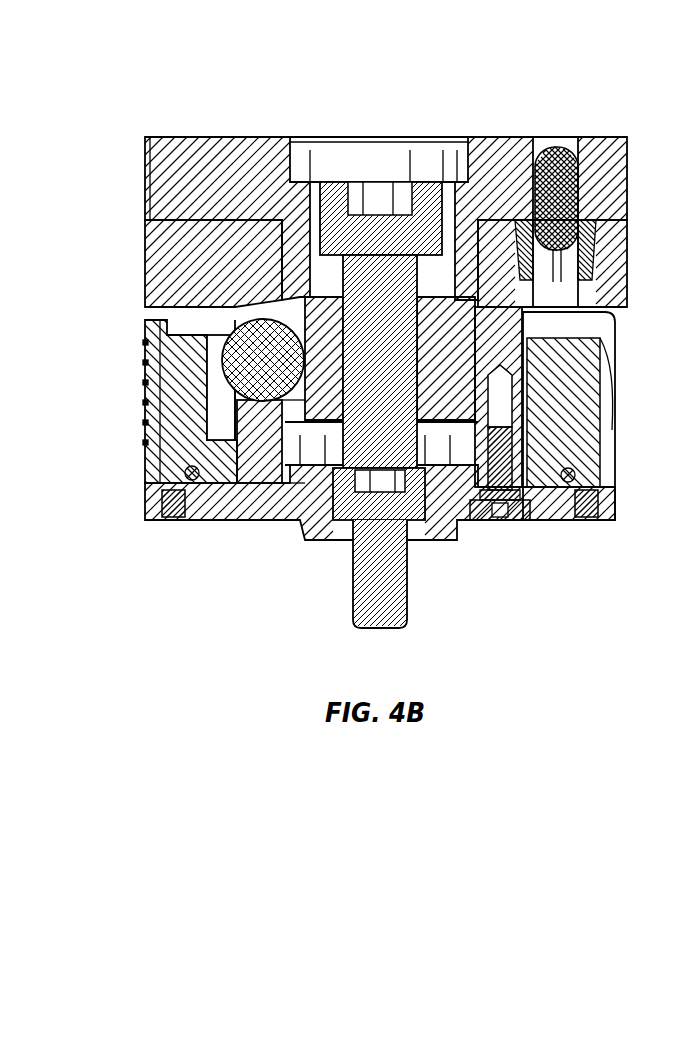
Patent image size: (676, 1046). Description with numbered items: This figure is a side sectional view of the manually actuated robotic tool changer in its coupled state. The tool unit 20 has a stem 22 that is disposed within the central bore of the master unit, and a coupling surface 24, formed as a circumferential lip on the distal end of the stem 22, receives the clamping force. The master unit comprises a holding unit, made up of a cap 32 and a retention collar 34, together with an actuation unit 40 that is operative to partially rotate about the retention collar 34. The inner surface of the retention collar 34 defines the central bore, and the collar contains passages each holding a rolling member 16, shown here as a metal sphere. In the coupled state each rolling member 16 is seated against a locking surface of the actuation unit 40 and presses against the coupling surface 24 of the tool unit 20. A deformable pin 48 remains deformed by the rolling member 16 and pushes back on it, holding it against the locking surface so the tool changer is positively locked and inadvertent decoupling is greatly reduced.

The rolling member 16 is at (276, 367).
The tool unit 20 is at (163, 170).
The stem 22 is at (318, 248).
The coupling surface 24 is at (293, 398).
The cap 32 is at (163, 248).
The retention collar 34 is at (252, 455).
The actuation unit 40 is at (191, 386).
The deformable pin 48 is at (223, 402).